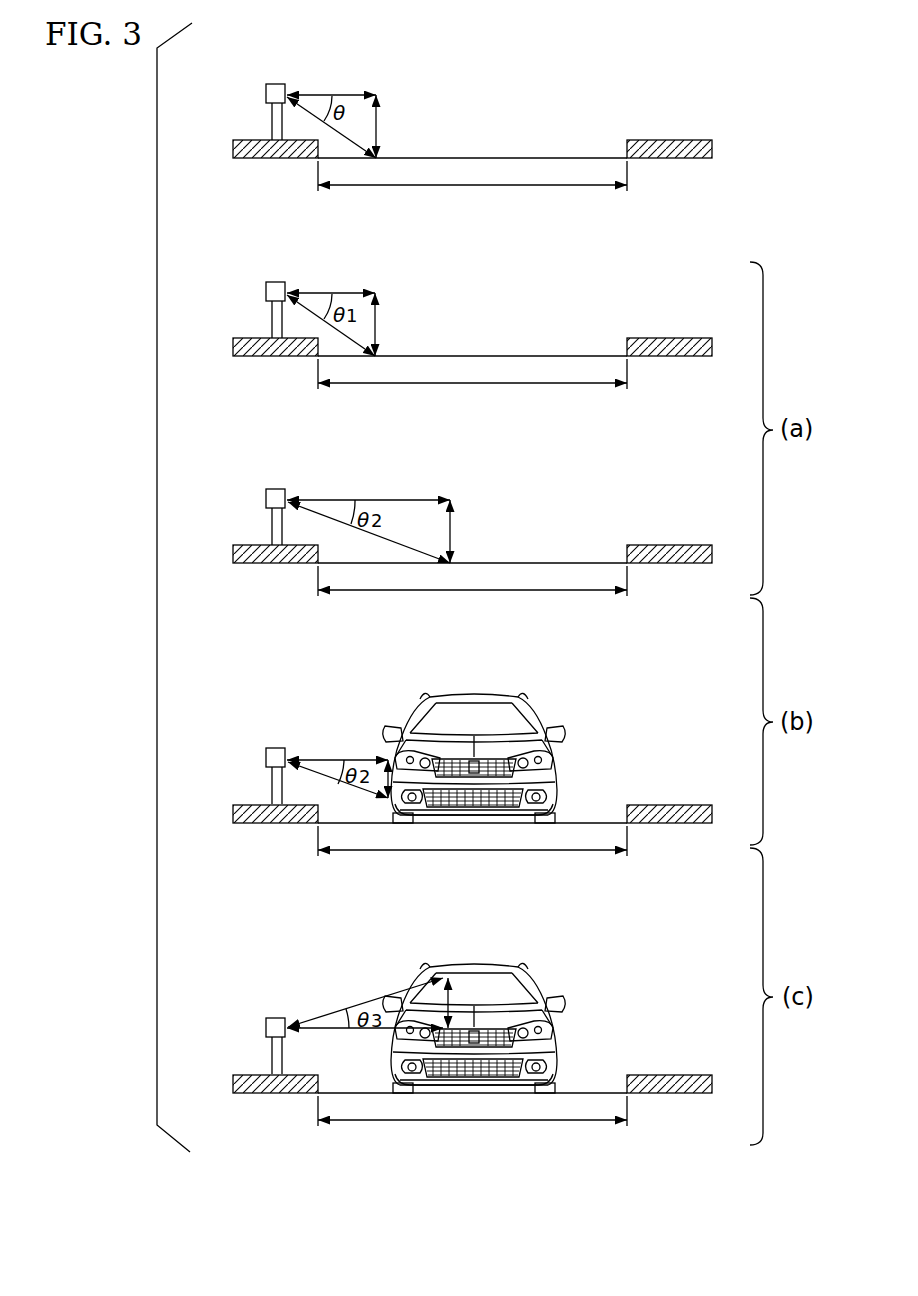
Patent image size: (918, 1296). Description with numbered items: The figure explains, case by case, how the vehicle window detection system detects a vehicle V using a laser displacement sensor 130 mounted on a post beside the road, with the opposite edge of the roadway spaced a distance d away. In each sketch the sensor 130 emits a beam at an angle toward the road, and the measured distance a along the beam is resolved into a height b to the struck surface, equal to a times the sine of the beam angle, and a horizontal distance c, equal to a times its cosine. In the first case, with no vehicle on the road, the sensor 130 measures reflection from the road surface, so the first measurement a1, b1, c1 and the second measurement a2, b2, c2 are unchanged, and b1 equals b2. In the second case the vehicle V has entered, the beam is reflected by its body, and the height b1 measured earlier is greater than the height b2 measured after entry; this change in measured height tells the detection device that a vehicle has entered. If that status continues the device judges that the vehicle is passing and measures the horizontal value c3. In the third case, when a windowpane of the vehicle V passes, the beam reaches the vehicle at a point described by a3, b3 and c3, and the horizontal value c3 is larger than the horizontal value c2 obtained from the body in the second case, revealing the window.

The laser displacement sensor 130 is at (280, 552).
The vehicle V is at (474, 882).
The distance between sensor and far edge d is at (472, 666).
The measured value of the distance a is at (331, 127).
The height up to the vehicle body b is at (384, 126).
The horizontal distance to the vehicle body c is at (331, 84).
The distance along line of sight a1 is at (331, 325).
The measured value for the first time b1 is at (390, 324).
The horizontal distance c1 is at (331, 282).
The distance along line of sight a2 is at (369, 652).
The measured value for the second time b2 is at (433, 649).
The measured value in the horizontal direction in case (b) c2 is at (368, 620).
The distance along line of sight a3 is at (365, 1002).
The vertical distance b3 is at (464, 1003).
The measured value in the horizontal direction c3 is at (365, 1042).